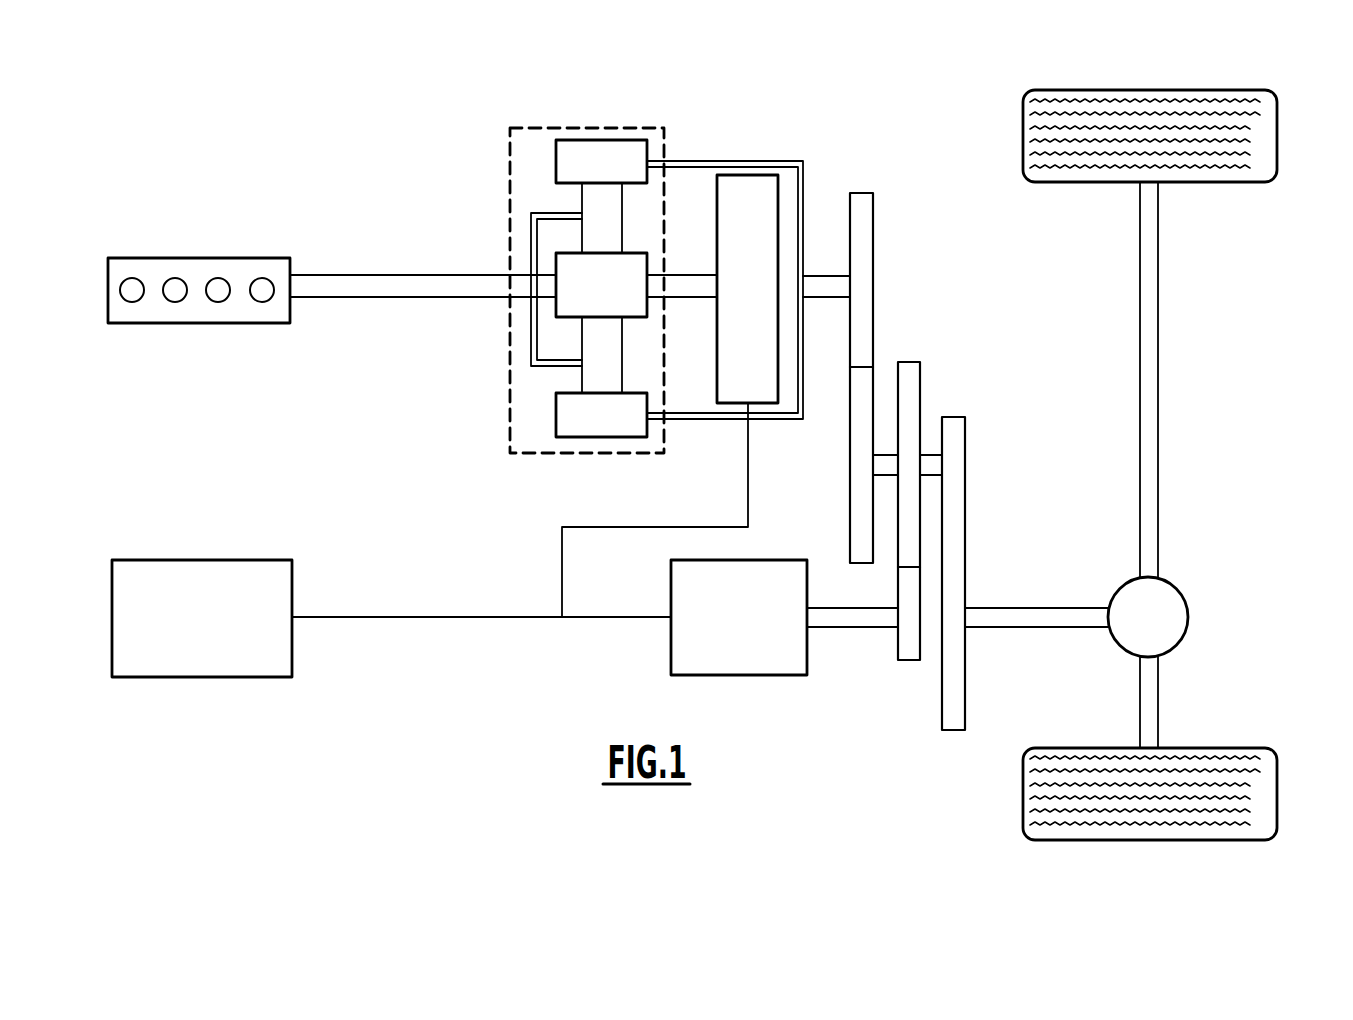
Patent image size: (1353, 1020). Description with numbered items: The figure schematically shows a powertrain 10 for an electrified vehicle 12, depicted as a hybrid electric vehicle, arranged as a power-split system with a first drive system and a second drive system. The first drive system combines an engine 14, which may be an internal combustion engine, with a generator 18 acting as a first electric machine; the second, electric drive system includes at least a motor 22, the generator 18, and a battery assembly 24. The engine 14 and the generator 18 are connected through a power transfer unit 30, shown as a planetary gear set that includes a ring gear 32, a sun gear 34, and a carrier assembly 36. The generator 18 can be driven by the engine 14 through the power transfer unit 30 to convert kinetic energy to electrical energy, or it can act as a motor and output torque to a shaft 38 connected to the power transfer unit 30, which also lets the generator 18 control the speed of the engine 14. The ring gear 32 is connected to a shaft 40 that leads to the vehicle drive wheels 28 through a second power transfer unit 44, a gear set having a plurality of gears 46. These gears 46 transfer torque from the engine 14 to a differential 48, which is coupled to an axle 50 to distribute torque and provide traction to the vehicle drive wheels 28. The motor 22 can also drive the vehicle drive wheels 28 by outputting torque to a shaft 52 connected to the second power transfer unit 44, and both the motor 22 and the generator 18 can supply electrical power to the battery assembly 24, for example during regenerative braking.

The powertrain 10 is at (345, 150).
The electrified vehicle 12 is at (778, 82).
The engine 14 is at (125, 258).
The generator 18 is at (725, 175).
The motor 22 is at (807, 658).
The battery assembly 24 is at (130, 560).
The vehicle drive wheels 28 is at (1277, 793).
The power transfer unit 30 is at (510, 410).
The ring gear 32 is at (556, 160).
The sun gear 34 is at (556, 262).
The carrier assembly 36 is at (531, 347).
The shaft 38 is at (676, 276).
The shaft 40 is at (835, 276).
The second power transfer unit 44 is at (950, 320).
The gears 46 is at (873, 327).
The differential 48 is at (1185, 640).
The axle 50 is at (1160, 368).
The shaft 52 is at (863, 627).